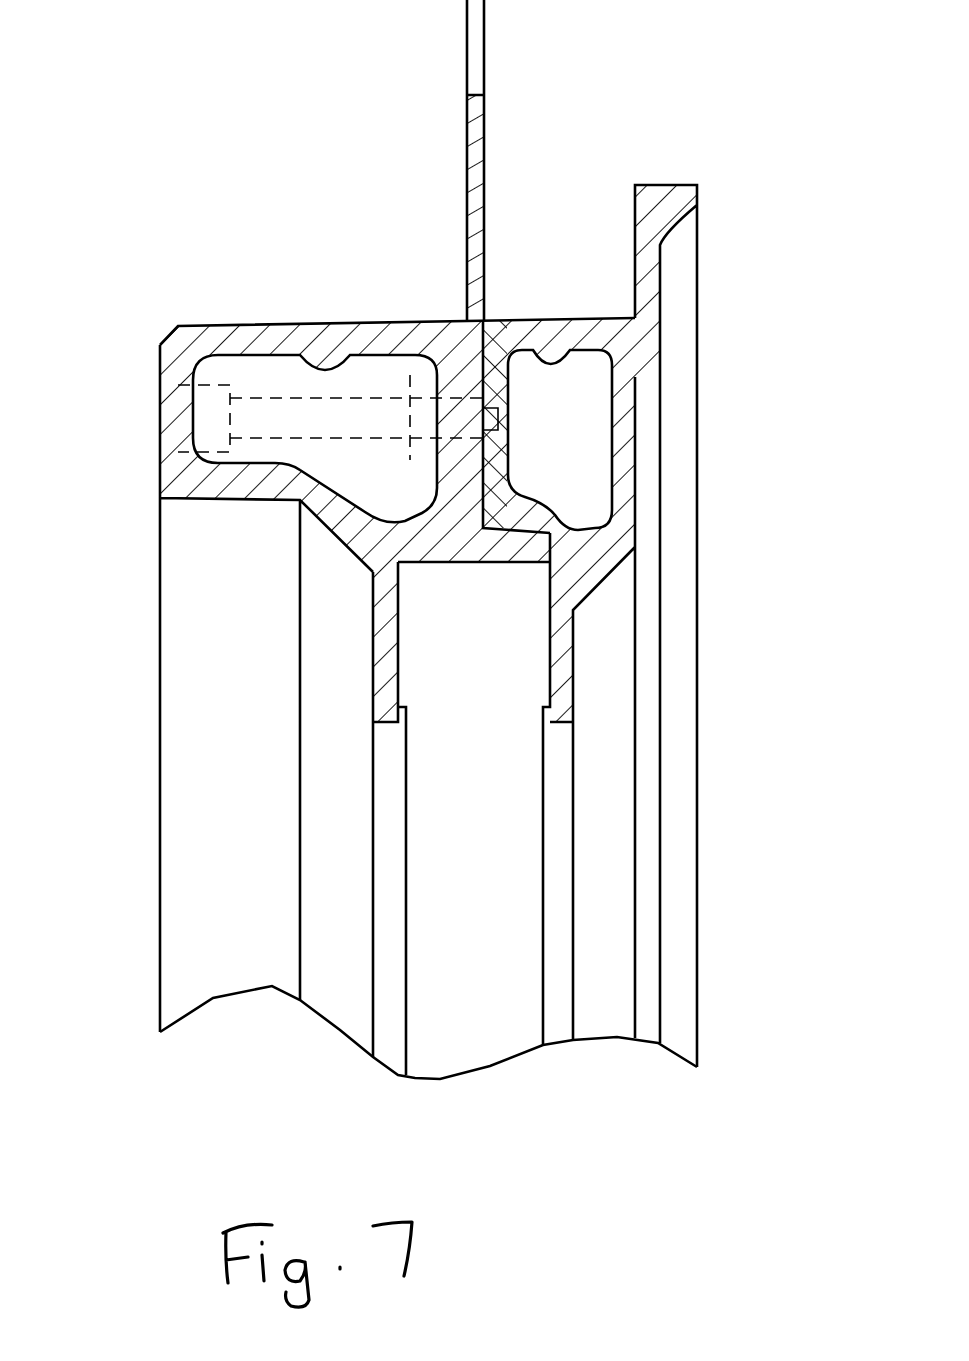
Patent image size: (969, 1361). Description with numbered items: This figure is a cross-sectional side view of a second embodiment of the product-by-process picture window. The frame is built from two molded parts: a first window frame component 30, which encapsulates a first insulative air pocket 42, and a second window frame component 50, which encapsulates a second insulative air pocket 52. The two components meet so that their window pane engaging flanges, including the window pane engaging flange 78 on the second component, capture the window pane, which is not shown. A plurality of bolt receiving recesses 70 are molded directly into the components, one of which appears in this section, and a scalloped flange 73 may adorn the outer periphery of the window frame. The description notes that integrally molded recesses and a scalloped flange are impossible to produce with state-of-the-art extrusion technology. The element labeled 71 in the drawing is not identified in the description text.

The first window frame component 30 is at (208, 335).
The first insulative air pocket 42 is at (288, 360).
The second insulative air pocket 52 is at (520, 348).
The scalloped flange 73 is at (486, 100).
The second window frame component 50 is at (668, 180).
The window pane engaging flange 78 is at (578, 672).
The tubular wall 71 is at (373, 668).
The bolt receiving recesses 70 is at (322, 447).